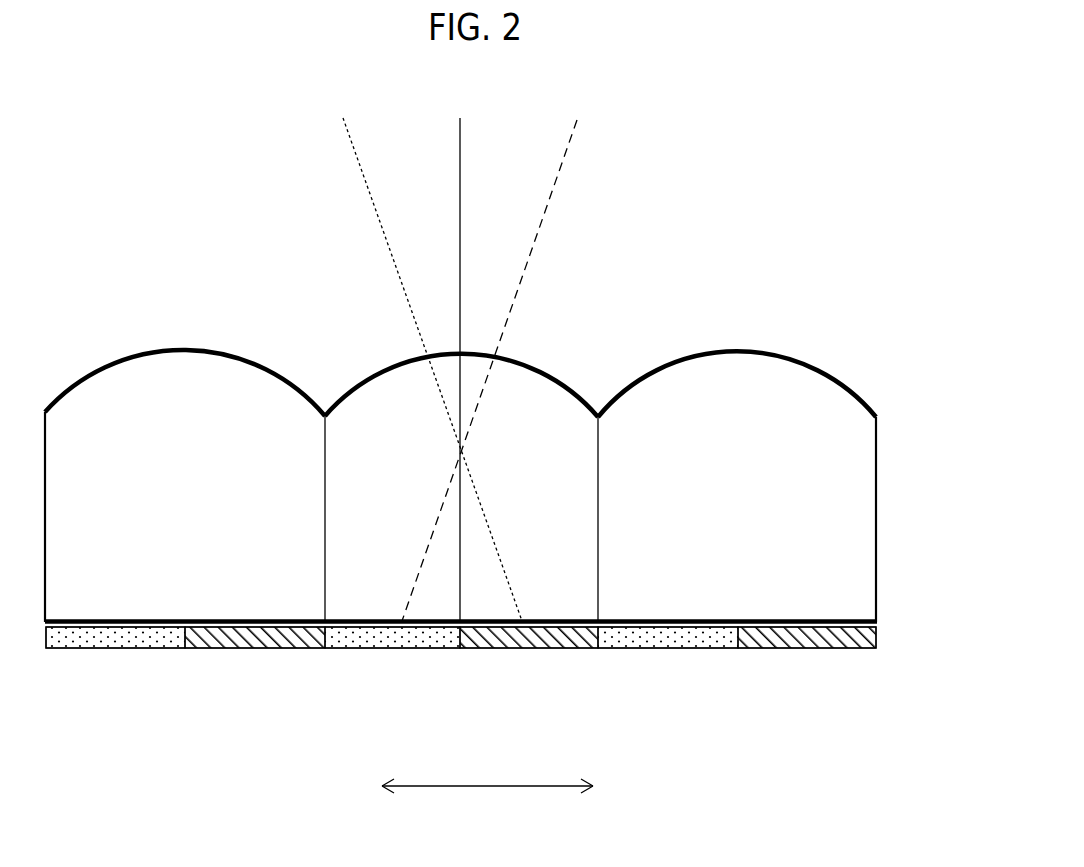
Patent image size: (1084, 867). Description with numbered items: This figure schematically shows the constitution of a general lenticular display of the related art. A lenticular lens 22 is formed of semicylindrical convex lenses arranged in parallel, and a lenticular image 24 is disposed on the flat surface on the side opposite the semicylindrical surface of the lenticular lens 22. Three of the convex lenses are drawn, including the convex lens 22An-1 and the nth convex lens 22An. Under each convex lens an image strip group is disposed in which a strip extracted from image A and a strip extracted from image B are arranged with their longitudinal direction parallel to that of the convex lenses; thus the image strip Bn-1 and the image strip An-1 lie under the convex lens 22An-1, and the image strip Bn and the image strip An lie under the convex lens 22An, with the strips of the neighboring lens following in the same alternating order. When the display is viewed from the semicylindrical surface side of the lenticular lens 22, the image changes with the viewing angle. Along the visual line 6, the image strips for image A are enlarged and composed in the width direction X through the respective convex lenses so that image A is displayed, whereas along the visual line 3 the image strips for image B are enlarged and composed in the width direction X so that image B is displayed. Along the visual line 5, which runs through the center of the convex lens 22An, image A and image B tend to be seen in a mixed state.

The lenticular lens 22 is at (884, 501).
The lenticular image 24 is at (884, 636).
The convex lens 22An-1 is at (181, 347).
The convex lens 22An is at (563, 380).
The visual line 3 is at (496, 352).
The visual line 5 is at (459, 353).
The visual line 6 is at (426, 352).
The image strip Bn-1 is at (113, 650).
The image strip An-1 is at (243, 650).
The image strip Bn is at (385, 650).
The image strip An is at (518, 650).
The width direction X is at (487, 801).